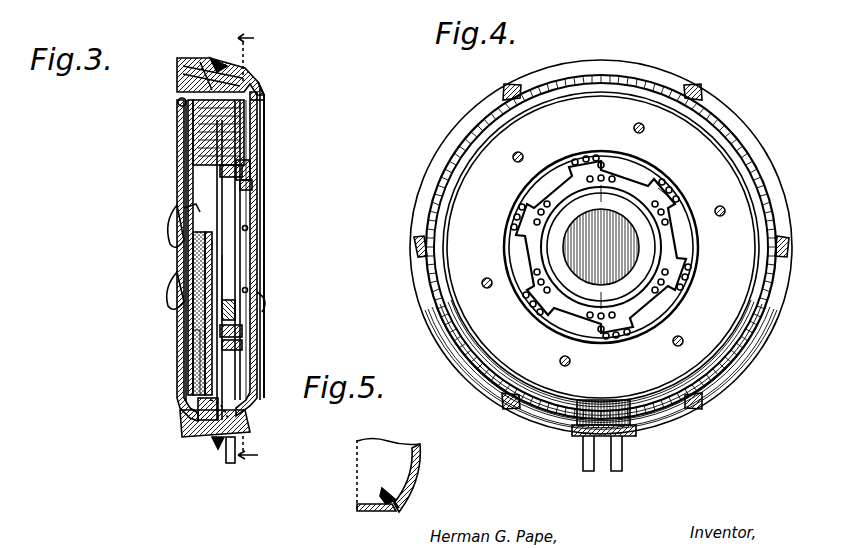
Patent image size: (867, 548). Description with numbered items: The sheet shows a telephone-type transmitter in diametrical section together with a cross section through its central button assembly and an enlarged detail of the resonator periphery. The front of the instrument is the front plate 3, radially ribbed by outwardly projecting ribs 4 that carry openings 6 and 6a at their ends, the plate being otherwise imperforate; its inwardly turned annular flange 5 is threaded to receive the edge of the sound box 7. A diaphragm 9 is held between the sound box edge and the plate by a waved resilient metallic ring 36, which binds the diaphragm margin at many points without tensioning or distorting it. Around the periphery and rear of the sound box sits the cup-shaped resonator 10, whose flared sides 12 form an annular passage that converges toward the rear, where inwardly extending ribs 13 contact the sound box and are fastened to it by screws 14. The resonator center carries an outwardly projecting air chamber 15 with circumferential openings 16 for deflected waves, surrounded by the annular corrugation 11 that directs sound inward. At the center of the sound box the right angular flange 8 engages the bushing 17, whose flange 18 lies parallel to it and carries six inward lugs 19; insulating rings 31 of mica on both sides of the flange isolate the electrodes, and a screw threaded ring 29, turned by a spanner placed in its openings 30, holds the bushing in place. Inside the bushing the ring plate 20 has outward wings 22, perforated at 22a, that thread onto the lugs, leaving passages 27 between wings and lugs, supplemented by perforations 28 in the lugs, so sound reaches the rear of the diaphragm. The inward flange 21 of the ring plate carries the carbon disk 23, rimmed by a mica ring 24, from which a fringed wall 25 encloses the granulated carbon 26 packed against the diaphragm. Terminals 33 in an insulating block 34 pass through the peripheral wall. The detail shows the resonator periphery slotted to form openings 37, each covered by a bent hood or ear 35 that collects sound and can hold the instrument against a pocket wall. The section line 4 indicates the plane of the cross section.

In FIG. 3, the front plate 3 is at (206, 252).
In FIG. 3, the ribs 4 is at (247, 246).
In FIG. 3, the annular flange 5 is at (190, 414).
In FIG. 4, the annular flange 5 is at (735, 100).
In FIG. 3, the opening 6 is at (168, 218).
In FIG. 3, the opening 6a is at (180, 104).
In FIG. 3, the sound box 7 is at (252, 78).
In FIG. 4, the sound box 7 is at (455, 136).
In FIG. 3, the right angular flange 8 is at (244, 345).
In FIG. 4, the right angular flange 8 is at (575, 150).
In FIG. 3, the diaphragm 9 is at (222, 344).
In FIG. 3, the resonator 10 is at (264, 155).
In FIG. 4, the resonator 10 is at (652, 76).
In FIG. 5, the resonator 10 is at (424, 456).
In FIG. 3, the annular corrugation 11 is at (178, 168).
In FIG. 4, the annular corrugation 11 is at (715, 227).
In FIG. 3, the flared sides 12 is at (186, 60).
In FIG. 4, the flared sides 12 is at (582, 64).
In FIG. 5, the flared sides 12 is at (357, 508).
In FIG. 3, the ribs 13 is at (248, 138).
In FIG. 3, the screws 14 is at (264, 112).
In FIG. 4, the screws 14 is at (518, 152).
In FIG. 3, the air chamber 15 is at (250, 270).
In FIG. 3, the openings 16 is at (264, 290).
In FIG. 3, the bushing 17 is at (254, 178).
In FIG. 4, the bushing 17 is at (640, 198).
In FIG. 3, the flange 18 is at (236, 162).
In FIG. 3, the lugs 19 is at (250, 320).
In FIG. 4, the lugs 19 is at (520, 230).
In FIG. 3, the ring plate 20 is at (224, 246).
In FIG. 4, the ring plate 20 is at (640, 324).
In FIG. 3, the flange 21 is at (264, 300).
In FIG. 4, the flange 21 is at (560, 320).
In FIG. 3, the wings 22 is at (256, 204).
In FIG. 4, the wings 22 is at (639, 124).
In FIG. 3, the perforations 22a is at (256, 200).
In FIG. 4, the perforations 22a is at (672, 182).
In FIG. 3, the carbon disk 23 is at (218, 266).
In FIG. 4, the carbon disk 23 is at (601, 247).
In FIG. 3, the ring of mica 24 is at (186, 194).
In FIG. 3, the fringed wall 25 is at (198, 342).
In FIG. 3, the granulated carbon 26 is at (195, 242).
In FIG. 3, the passages 27 is at (258, 306).
In FIG. 4, the passages 27 is at (558, 182).
In FIG. 3, the perforations 28 is at (220, 172).
In FIG. 4, the perforations 28 is at (540, 214).
In FIG. 3, the screw threaded ring 29 is at (250, 326).
In FIG. 4, the screw threaded ring 29 is at (672, 298).
In FIG. 3, the openings 30 is at (250, 333).
In FIG. 4, the openings 30 is at (601, 162).
In FIG. 3, the insulating rings 31 is at (218, 132).
In FIG. 3, the terminals 33 is at (228, 464).
In FIG. 4, the terminals 33 is at (616, 463).
In FIG. 3, the insulating block 34 is at (250, 425).
In FIG. 4, the insulating block 34 is at (655, 432).
In FIG. 3, the hood or ear 35 is at (216, 60).
In FIG. 4, the hood or ear 35 is at (507, 86).
In FIG. 5, the hood or ear 35 is at (390, 490).
In FIG. 3, the resilient metallic ring 36 is at (190, 126).
In FIG. 5, the openings 37 is at (394, 502).